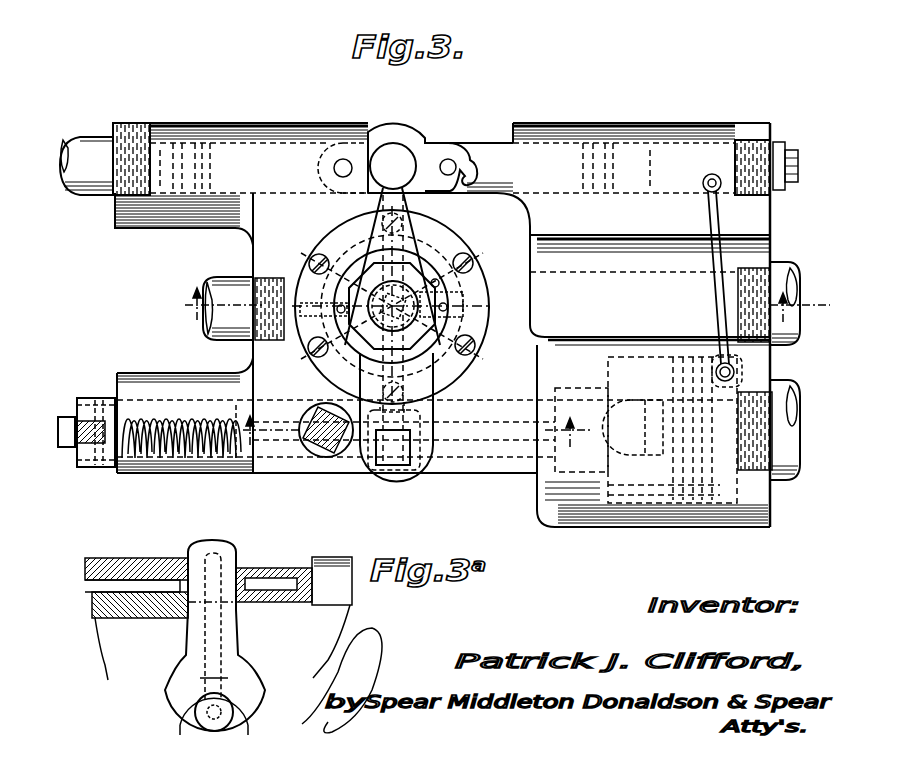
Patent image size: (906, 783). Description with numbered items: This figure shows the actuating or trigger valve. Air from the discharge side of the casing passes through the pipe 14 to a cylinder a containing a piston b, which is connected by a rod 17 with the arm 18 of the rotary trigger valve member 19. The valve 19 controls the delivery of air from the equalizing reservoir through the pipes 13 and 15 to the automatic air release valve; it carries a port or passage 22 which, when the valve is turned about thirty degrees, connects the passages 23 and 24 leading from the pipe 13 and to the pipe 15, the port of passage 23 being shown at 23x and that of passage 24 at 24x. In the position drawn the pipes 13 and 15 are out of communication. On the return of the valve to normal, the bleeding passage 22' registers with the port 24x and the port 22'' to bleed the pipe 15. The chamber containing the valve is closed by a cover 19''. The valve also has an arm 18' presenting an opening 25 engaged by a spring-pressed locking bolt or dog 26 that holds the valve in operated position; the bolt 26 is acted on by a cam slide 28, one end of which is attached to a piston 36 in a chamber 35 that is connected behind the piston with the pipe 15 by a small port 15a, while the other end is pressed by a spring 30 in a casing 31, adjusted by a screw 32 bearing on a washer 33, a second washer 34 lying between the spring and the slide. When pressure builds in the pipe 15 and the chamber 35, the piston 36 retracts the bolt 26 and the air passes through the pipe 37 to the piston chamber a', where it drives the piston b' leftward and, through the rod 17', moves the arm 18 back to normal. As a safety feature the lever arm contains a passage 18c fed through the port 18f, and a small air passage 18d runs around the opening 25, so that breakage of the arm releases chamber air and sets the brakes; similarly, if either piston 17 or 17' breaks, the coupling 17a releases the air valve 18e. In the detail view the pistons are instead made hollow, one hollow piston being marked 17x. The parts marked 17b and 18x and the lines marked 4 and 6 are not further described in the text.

In FIG. 3, the pipe 14 is at (90, 160).
In FIG. 3, the cylinder a is at (164, 145).
In FIG. 3, the piston b is at (191, 145).
In FIG. 3, the rod 17 is at (240, 146).
In FIG. 3, the coupling 17a is at (393, 135).
In FIG. 3, the air valve 18e is at (408, 152).
In FIG. 3, the hook lug 17b is at (450, 160).
In FIG. 3, the rod 17' is at (640, 312).
In FIG. 3, the piston b' is at (595, 143).
In FIG. 3, the piston chamber a' is at (655, 143).
In FIG. 3, the valve arm 18 is at (384, 335).
In FIG. 3, the rotary trigger valve member 19 is at (392, 306).
In FIG. 3, the cover 19'' is at (317, 242).
In FIG. 3, the air passage 18c is at (384, 228).
In FIG. 3, the port 18f is at (308, 265).
In FIG. 3, the pipe 13 is at (233, 283).
In FIG. 3, the section line 4- 4 is at (497, 305).
In FIG. 3, the passage 24 is at (503, 302).
In FIG. 3, the bleeding passage 22' is at (455, 295).
In FIG. 3, the port 23x is at (330, 318).
In FIG. 3, the port or passage 22 is at (392, 306).
In FIG. 3, the passage 23 is at (305, 335).
In FIG. 3, the valve arm 18' is at (392, 309).
In FIG. 3, the port 24x is at (490, 333).
In FIG. 3, the bleeding port 22'' is at (471, 383).
In FIG. 3, the pipe 15 is at (631, 340).
In FIG. 3, the pipe 37 is at (712, 305).
In FIG. 3, the port 15a is at (733, 368).
In FIG. 3, the chamber 35 is at (663, 430).
In FIG. 3, the piston 36 is at (690, 470).
In FIG. 3, the screw 32 is at (97, 412).
In FIG. 3, the washer 33 is at (113, 470).
In FIG. 3, the spring 30 is at (190, 467).
In FIG. 3, the casing 31 is at (222, 458).
In FIG. 3, the second washer 34 is at (250, 470).
In FIG. 3, the locking bolt 26 is at (330, 455).
In FIG. 3, the air passage 18d is at (397, 475).
In FIG. 3, the opening 25 is at (405, 462).
In FIG. 3, the cam slide 28 is at (518, 430).
In FIG. 3, the section line 6- 6 is at (419, 431).
In FIG. 3A, the hollow piston 17x is at (163, 564).
In FIG. 3A, the lever section 18x is at (193, 655).